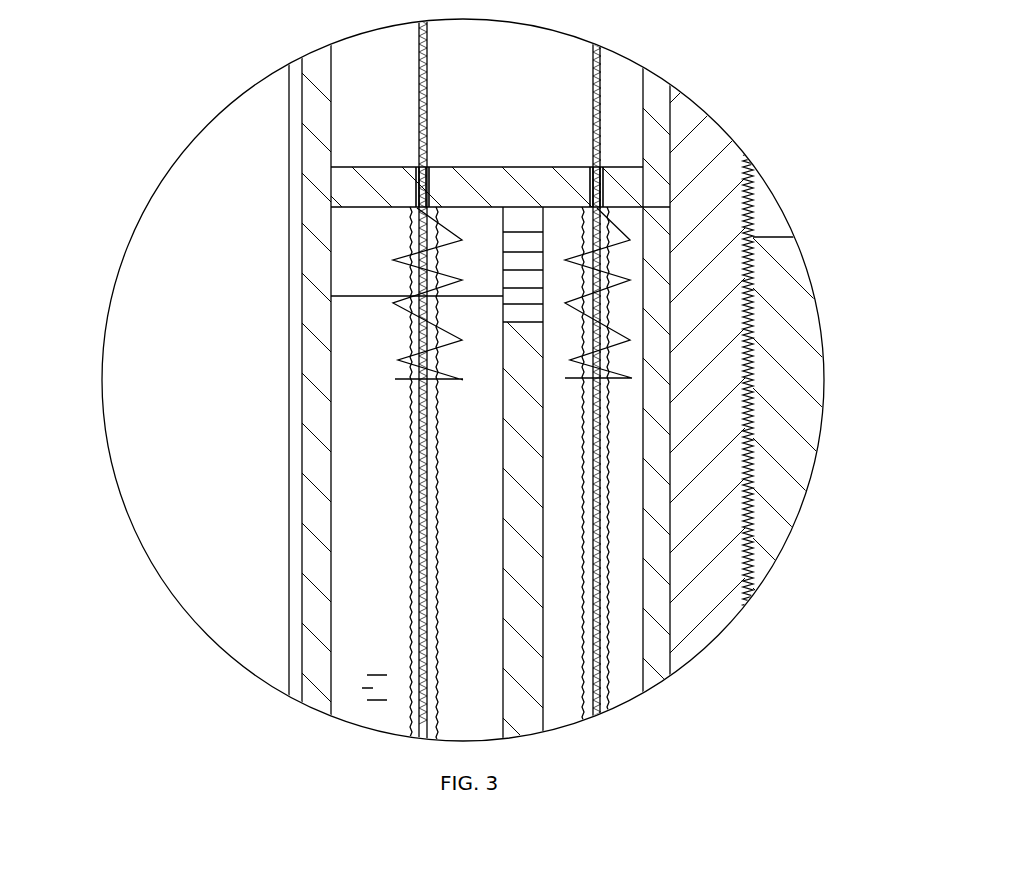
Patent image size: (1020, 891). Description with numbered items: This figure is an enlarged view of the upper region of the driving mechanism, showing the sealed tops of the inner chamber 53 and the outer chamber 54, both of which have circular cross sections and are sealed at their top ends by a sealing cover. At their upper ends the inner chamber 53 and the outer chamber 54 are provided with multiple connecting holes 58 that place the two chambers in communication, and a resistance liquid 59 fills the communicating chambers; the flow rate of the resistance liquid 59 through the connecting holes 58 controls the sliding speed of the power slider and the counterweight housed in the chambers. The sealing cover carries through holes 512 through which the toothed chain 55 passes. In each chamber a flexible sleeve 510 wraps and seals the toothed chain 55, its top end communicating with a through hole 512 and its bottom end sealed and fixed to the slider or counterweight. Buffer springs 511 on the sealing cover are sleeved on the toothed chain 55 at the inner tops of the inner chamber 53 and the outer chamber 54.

The inner chamber 53 is at (355, 248).
The outer chamber 54 is at (630, 425).
The toothed chain 55 is at (420, 97).
The connecting hole 58 is at (530, 237).
The resistance liquid 59 is at (372, 502).
The flexible sleeve 510 is at (610, 520).
The buffer spring 511 is at (417, 297).
The through hole 512 is at (603, 190).